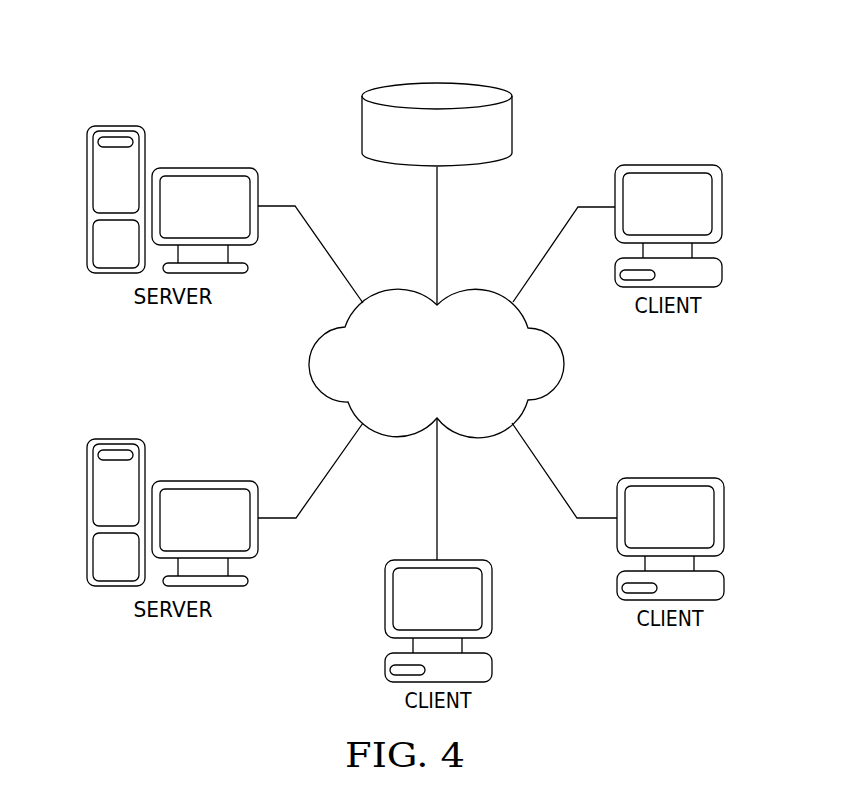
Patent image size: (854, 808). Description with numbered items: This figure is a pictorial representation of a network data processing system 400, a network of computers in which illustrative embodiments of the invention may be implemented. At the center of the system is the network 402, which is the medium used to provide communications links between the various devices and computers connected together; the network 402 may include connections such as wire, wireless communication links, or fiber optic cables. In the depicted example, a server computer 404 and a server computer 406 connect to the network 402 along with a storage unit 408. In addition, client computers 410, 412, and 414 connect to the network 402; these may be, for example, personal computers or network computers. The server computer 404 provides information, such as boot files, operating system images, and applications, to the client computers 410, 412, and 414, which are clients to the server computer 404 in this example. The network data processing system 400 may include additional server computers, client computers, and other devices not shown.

The network data processing system 400 is at (624, 67).
The network 402 is at (308, 363).
The server computer 404 is at (87, 488).
The server computer 406 is at (87, 175).
The storage unit 408 is at (362, 130).
The client computer 410 is at (725, 210).
The client computer 412 is at (727, 520).
The client computer 414 is at (493, 598).